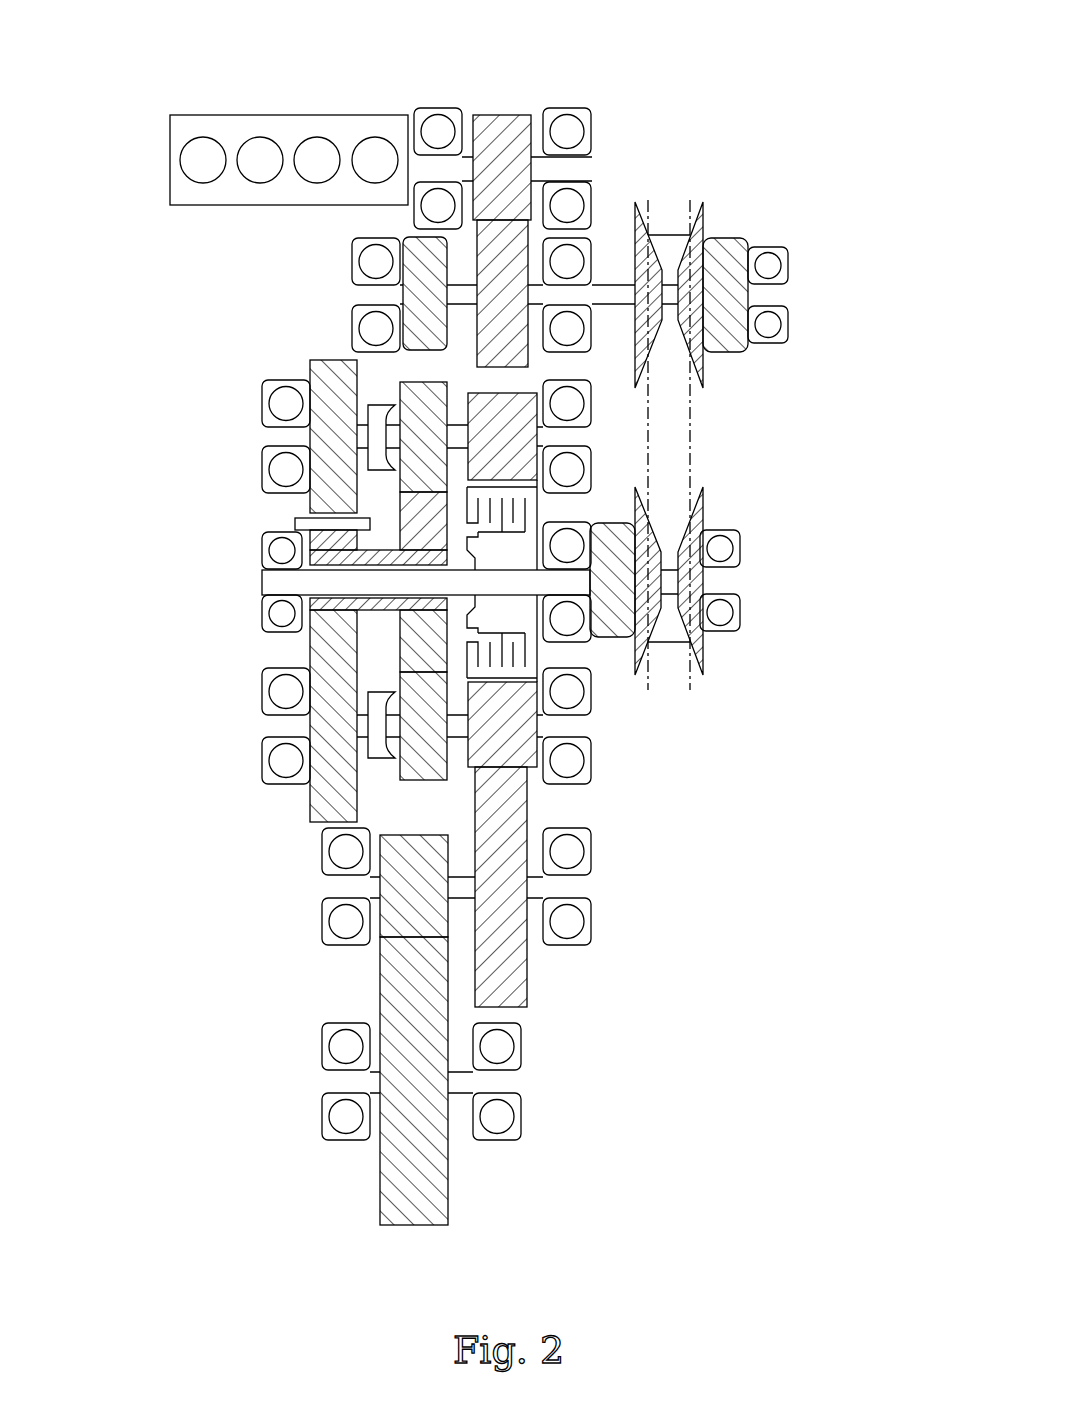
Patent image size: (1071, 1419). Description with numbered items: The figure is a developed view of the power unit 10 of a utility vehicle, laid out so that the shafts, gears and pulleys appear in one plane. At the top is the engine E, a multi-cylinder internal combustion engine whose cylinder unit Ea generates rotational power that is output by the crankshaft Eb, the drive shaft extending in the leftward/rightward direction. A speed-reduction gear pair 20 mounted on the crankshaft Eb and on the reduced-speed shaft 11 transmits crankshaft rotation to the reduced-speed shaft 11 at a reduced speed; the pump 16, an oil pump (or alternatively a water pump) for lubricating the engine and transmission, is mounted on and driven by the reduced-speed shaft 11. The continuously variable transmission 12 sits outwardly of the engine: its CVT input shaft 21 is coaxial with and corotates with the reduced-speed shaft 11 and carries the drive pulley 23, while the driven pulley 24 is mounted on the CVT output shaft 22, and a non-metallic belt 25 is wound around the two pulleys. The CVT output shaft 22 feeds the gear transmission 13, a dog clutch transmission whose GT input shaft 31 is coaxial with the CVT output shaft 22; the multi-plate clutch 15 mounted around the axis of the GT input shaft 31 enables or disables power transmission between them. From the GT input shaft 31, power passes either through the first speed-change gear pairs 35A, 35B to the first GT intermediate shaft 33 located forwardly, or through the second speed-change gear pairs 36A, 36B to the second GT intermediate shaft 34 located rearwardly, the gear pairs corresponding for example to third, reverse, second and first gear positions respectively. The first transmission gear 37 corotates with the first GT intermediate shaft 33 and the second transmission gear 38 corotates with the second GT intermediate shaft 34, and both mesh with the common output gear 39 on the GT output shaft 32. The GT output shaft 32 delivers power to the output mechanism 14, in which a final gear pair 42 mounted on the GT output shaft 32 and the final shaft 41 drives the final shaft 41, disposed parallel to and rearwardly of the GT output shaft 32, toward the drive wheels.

The power unit 10 is at (770, 96).
The engine E is at (190, 114).
The cylinder unit Ea is at (258, 113).
The crankshaft Eb is at (583, 168).
The speed-reduction gear pair 20 is at (503, 130).
The reduced-speed shaft 11 is at (405, 290).
The pump 16 is at (414, 246).
The continuously variable transmission 12 is at (768, 221).
The drive pulley 23 is at (700, 205).
The CVT input shaft 21 is at (782, 295).
The belt 25 is at (690, 448).
The driven pulley 24 is at (697, 668).
The CVT output shaft 22 is at (733, 575).
The gear transmission 13 is at (182, 684).
The first GT intermediate shaft 33 is at (272, 435).
The first speed-change gear pair 35B is at (332, 363).
The first speed-change gear pair 35A is at (420, 483).
The first transmission gear 37 is at (523, 405).
The clutch 15 is at (545, 655).
The GT input shaft 31 is at (272, 578).
The second GT intermediate shaft 34 is at (272, 722).
The second speed-change gear pair 36A is at (420, 632).
The second speed-change gear pair 36B is at (318, 800).
The second transmission gear 38 is at (520, 745).
The output mechanism 14 is at (337, 999).
The GT output shaft 32 is at (320, 880).
The common output gear 39 is at (527, 968).
The final shaft 41 is at (514, 1082).
The final gear pair 42 is at (390, 1170).